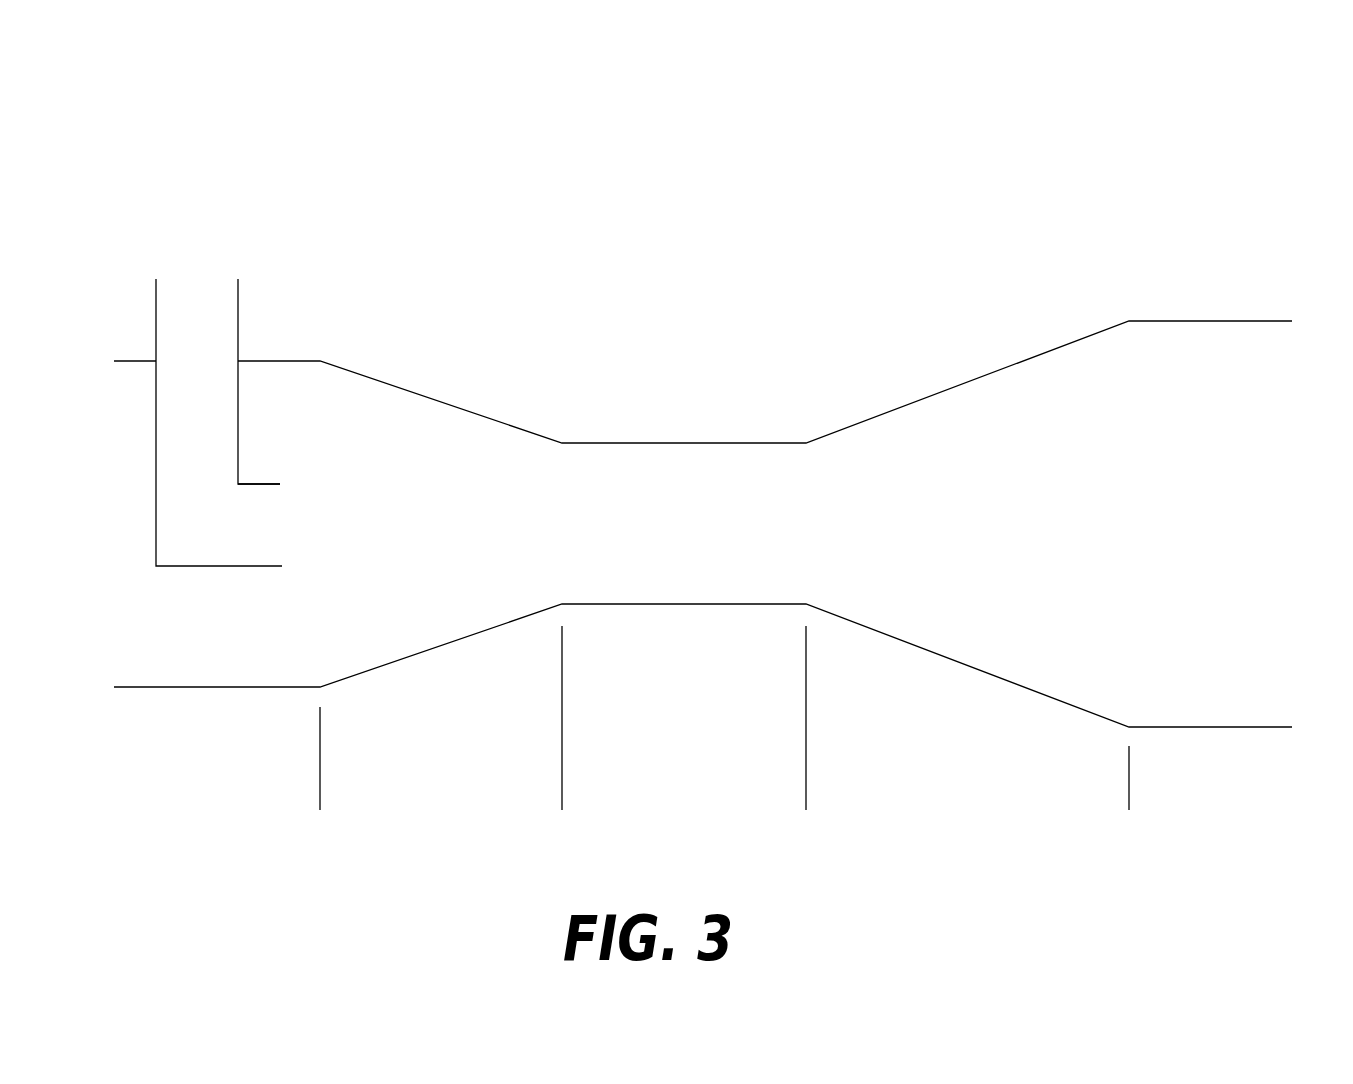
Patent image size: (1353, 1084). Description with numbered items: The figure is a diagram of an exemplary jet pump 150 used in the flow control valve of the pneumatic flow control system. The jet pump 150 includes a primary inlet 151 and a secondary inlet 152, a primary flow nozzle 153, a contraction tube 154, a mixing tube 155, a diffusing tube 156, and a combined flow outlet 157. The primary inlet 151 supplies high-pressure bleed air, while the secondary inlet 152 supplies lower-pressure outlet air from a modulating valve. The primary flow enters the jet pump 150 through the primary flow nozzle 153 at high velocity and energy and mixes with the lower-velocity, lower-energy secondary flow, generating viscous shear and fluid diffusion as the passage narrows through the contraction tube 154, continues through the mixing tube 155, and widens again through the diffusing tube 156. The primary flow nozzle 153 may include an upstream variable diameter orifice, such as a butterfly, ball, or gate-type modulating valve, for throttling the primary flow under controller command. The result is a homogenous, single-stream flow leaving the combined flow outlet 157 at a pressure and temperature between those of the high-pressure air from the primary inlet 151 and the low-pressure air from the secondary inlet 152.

The jet pump 150 is at (374, 131).
The primary inlet 151 is at (198, 276).
The secondary inlet 152 is at (121, 372).
The primary flow nozzle 153 is at (291, 523).
The contraction tube 154 is at (555, 779).
The mixing tube 155 is at (569, 779).
The diffusing tube 156 is at (813, 779).
The combined flow outlet 157 is at (1270, 338).